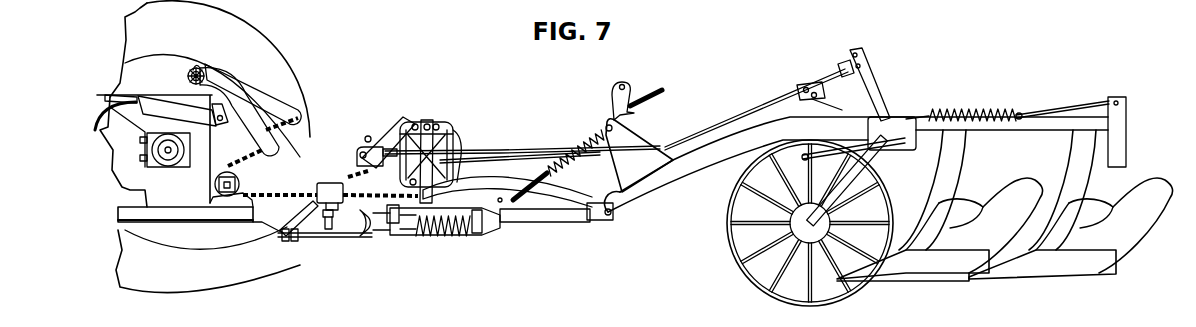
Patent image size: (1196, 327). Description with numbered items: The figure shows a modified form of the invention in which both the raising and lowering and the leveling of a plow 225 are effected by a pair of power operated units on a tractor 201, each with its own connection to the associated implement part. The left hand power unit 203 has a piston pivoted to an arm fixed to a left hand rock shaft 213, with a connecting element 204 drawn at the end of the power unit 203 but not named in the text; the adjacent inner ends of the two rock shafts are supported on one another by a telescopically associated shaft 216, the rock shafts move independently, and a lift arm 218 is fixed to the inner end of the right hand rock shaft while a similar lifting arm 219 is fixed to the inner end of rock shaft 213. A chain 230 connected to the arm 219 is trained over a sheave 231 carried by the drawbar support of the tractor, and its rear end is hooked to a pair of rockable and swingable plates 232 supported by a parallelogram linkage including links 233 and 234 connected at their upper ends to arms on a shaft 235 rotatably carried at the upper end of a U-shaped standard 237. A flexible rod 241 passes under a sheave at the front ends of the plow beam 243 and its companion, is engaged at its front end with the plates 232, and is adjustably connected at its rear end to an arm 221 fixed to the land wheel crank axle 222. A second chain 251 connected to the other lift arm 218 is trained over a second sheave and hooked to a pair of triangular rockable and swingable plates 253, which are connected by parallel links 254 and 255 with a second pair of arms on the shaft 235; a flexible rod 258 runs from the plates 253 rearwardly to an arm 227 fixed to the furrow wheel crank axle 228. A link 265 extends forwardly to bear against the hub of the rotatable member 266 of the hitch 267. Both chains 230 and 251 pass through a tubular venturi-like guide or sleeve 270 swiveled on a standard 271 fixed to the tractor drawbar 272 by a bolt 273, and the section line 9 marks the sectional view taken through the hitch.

The section line 9- 9 is at (373, 82).
The tractor 201 is at (93, 53).
The left hand power unit 203 is at (172, 95).
The cylinder link 204 is at (200, 118).
The left hand rock shaft 213 is at (193, 70).
The telescopically associated shaft 216 is at (201, 68).
The lift arm 218 is at (263, 92).
The lifting arm 219 is at (295, 108).
The arm on land wheel crank axle 221 is at (875, 92).
The land wheel crank axle 222 is at (875, 158).
The plow 225 is at (985, 68).
The arm on furrow wheel crank axle 227 is at (820, 100).
The furrow wheel crank axle 228 is at (848, 184).
The chain 230 is at (265, 162).
The sheave 231 is at (215, 185).
The rockable and swingable plates 232 is at (458, 160).
The link 233 is at (400, 140).
The link 234 is at (452, 140).
The shaft 235 is at (425, 125).
The U-shaped standard 237 is at (497, 171).
The flexible rod 241 is at (508, 172).
The plow beam 243 is at (715, 155).
The second chain 251 is at (350, 173).
The triangular rockable and swingable plates 253 is at (363, 150).
The parallel link 254 is at (367, 137).
The parallel link 255 is at (402, 118).
The flexible rod 258 is at (493, 156).
The link 265 is at (393, 228).
The rotatable member of the hitch 266 is at (356, 248).
The hitch 267 is at (408, 249).
The tubular venturi-like guide or sleeve 270 is at (312, 203).
The standard 271 is at (278, 237).
The drawbar 272 is at (316, 242).
The bolt 273 is at (327, 230).